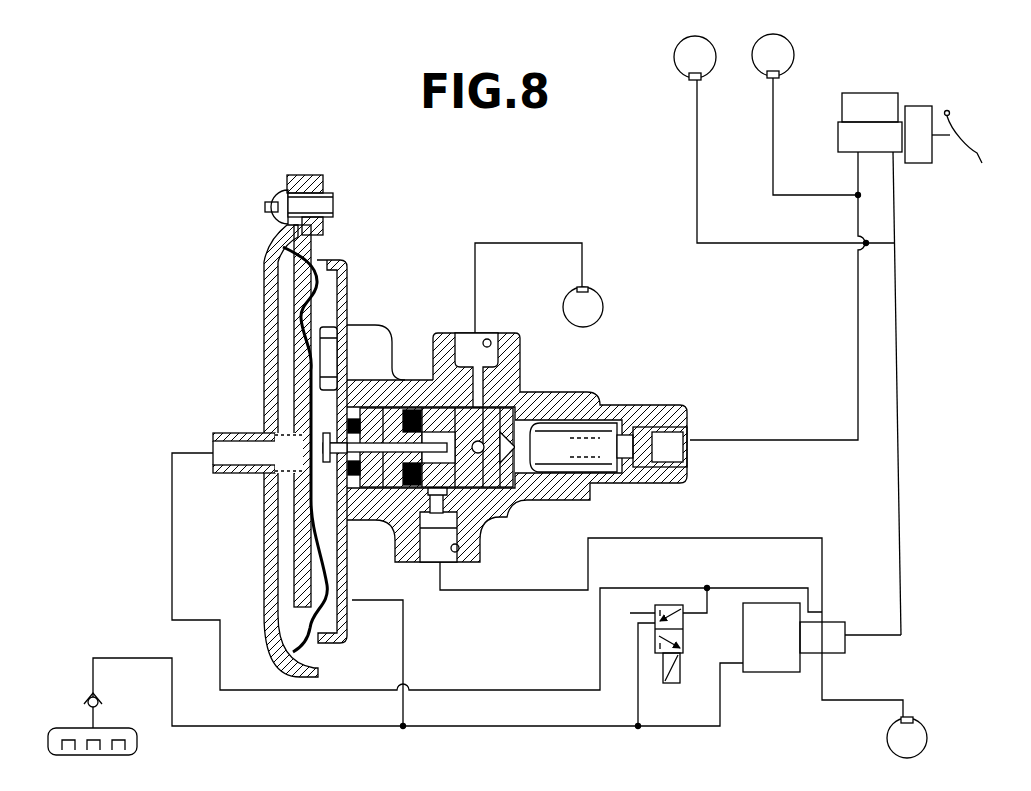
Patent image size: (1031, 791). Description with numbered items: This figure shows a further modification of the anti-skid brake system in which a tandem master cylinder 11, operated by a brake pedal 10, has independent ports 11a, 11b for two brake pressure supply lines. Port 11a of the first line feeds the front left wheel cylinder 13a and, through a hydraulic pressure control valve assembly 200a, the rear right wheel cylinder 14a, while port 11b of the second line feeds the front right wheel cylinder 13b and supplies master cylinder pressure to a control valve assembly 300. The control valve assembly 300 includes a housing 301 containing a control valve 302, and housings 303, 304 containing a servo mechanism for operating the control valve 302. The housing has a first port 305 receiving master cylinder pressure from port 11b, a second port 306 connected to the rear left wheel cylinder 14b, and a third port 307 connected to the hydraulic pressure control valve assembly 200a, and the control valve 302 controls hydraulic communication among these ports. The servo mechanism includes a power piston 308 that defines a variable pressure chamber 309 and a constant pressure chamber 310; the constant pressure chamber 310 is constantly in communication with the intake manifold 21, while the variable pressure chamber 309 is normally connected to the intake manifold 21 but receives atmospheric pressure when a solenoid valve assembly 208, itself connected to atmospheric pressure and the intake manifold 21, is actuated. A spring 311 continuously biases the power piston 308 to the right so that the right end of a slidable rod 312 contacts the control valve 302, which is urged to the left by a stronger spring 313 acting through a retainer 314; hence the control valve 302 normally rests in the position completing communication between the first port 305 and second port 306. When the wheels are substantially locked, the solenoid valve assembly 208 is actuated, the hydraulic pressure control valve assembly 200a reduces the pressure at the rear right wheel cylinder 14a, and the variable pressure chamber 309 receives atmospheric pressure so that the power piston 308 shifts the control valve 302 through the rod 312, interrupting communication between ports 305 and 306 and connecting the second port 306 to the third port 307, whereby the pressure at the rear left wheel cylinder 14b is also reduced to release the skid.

The brake pedal 10 is at (977, 153).
The tandem master cylinder 11 is at (884, 145).
The port of first brake pressure supply line 11a is at (893, 153).
The port of second brake pressure supply line 11b is at (852, 152).
The front left wheel cylinder 13a is at (690, 78).
The front right wheel cylinder 13b is at (780, 82).
The rear right wheel cylinder 14a is at (927, 728).
The rear left wheel cylinder 14b is at (603, 302).
The intake manifold 21 is at (70, 724).
The hydraulic pressure control valve assembly 200a is at (774, 672).
The solenoid valve assembly 208 is at (685, 656).
The control valve assembly 300 is at (378, 345).
The housing 301 is at (617, 483).
The control valve 302 is at (500, 487).
The housing 303 is at (342, 260).
The housing 304 is at (262, 287).
The first port 305 is at (665, 427).
The second port 306 is at (487, 340).
The third port 307 is at (463, 557).
The power piston 308 is at (297, 500).
The variable pressure chamber 309 is at (287, 553).
The constant pressure chamber 310 is at (333, 605).
The spring 311 is at (275, 407).
The slidable rod 312 is at (383, 522).
The spring 313 is at (603, 420).
The retainer 314 is at (540, 405).